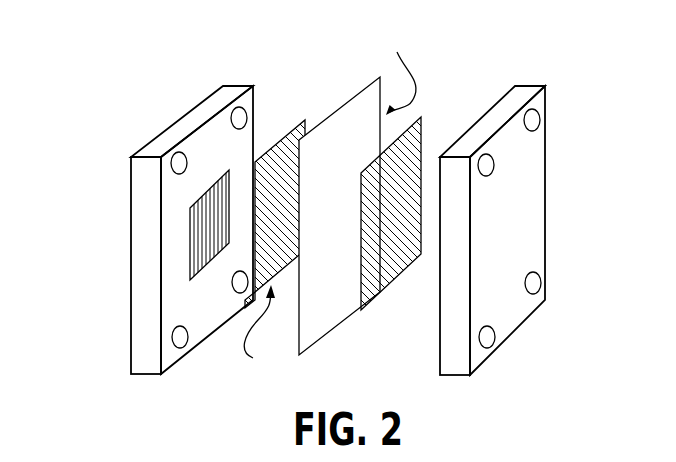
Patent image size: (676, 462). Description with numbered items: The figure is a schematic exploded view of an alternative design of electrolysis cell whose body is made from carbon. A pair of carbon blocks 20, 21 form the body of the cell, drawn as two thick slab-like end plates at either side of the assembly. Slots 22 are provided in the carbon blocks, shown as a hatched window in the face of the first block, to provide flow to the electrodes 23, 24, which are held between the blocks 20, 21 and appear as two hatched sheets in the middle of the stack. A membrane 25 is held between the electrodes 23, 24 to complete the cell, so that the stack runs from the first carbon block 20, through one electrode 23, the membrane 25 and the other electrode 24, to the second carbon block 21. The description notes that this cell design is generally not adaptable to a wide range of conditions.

The carbon block 20 is at (143, 222).
The carbon block 21 is at (528, 240).
The slots 22 is at (197, 246).
The electrode 23 is at (281, 140).
The electrode 24 is at (421, 126).
The membrane 25 is at (320, 298).